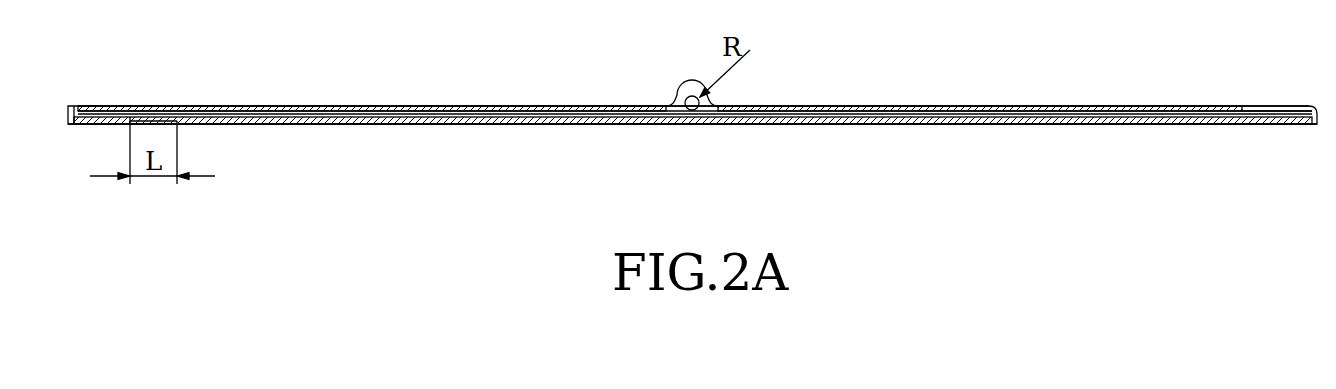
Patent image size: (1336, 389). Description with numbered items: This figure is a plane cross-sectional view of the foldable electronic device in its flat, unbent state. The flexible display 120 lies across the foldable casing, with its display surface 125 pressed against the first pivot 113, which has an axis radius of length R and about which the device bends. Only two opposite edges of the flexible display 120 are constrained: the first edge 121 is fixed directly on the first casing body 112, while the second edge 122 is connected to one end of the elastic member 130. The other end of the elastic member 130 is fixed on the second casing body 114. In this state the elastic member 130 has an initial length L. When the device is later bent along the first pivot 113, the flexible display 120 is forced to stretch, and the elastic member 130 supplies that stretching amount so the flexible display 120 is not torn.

The first casing body 112 is at (1016, 125).
The first pivot 113 is at (678, 88).
The second casing body 114 is at (397, 125).
The flexible display 120 is at (1117, 113).
The first edge 121 is at (1245, 108).
The second edge 122 is at (178, 107).
The display surface 125 is at (918, 107).
The elastic member 130 is at (171, 107).